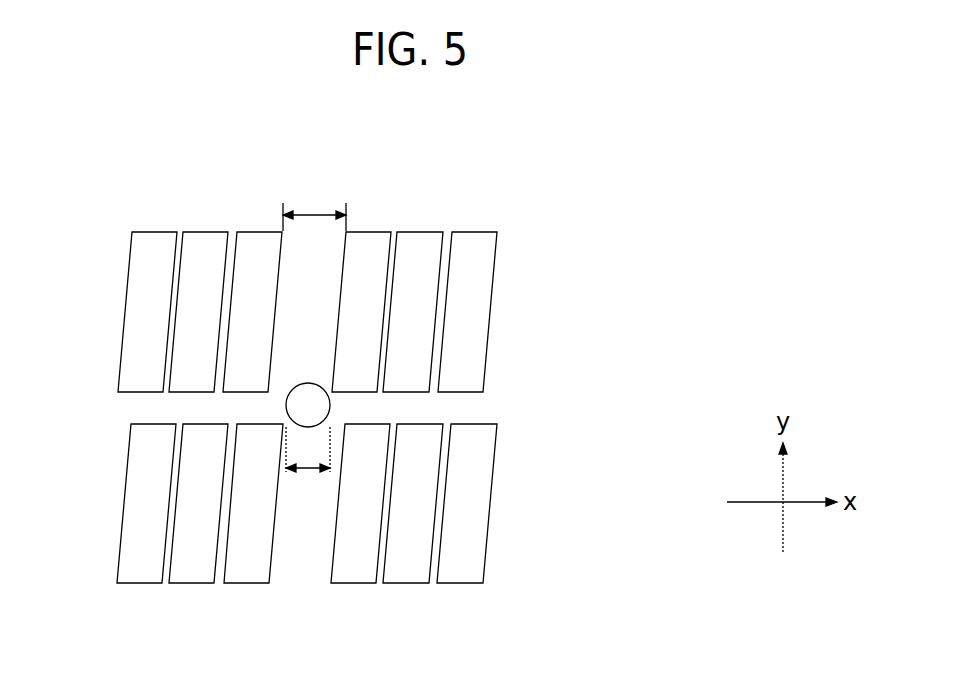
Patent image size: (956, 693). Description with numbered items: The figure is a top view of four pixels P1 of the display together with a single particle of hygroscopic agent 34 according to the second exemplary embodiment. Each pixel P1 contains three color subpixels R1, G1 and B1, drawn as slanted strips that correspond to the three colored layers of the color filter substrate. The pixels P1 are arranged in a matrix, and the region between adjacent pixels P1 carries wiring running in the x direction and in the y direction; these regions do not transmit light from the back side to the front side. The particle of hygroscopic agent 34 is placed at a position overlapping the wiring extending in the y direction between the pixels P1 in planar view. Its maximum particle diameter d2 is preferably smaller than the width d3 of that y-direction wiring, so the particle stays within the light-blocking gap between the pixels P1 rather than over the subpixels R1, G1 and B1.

The red subpixel R1 is at (158, 230).
The green subpixel G1 is at (206, 230).
The blue subpixel B1 is at (259, 230).
The hygroscopic agent 34 is at (313, 383).
The pixel P1 is at (85, 313).
The maximum particle diameter d2 is at (308, 467).
The width of the wiring extending in the y direction d3 is at (314, 206).